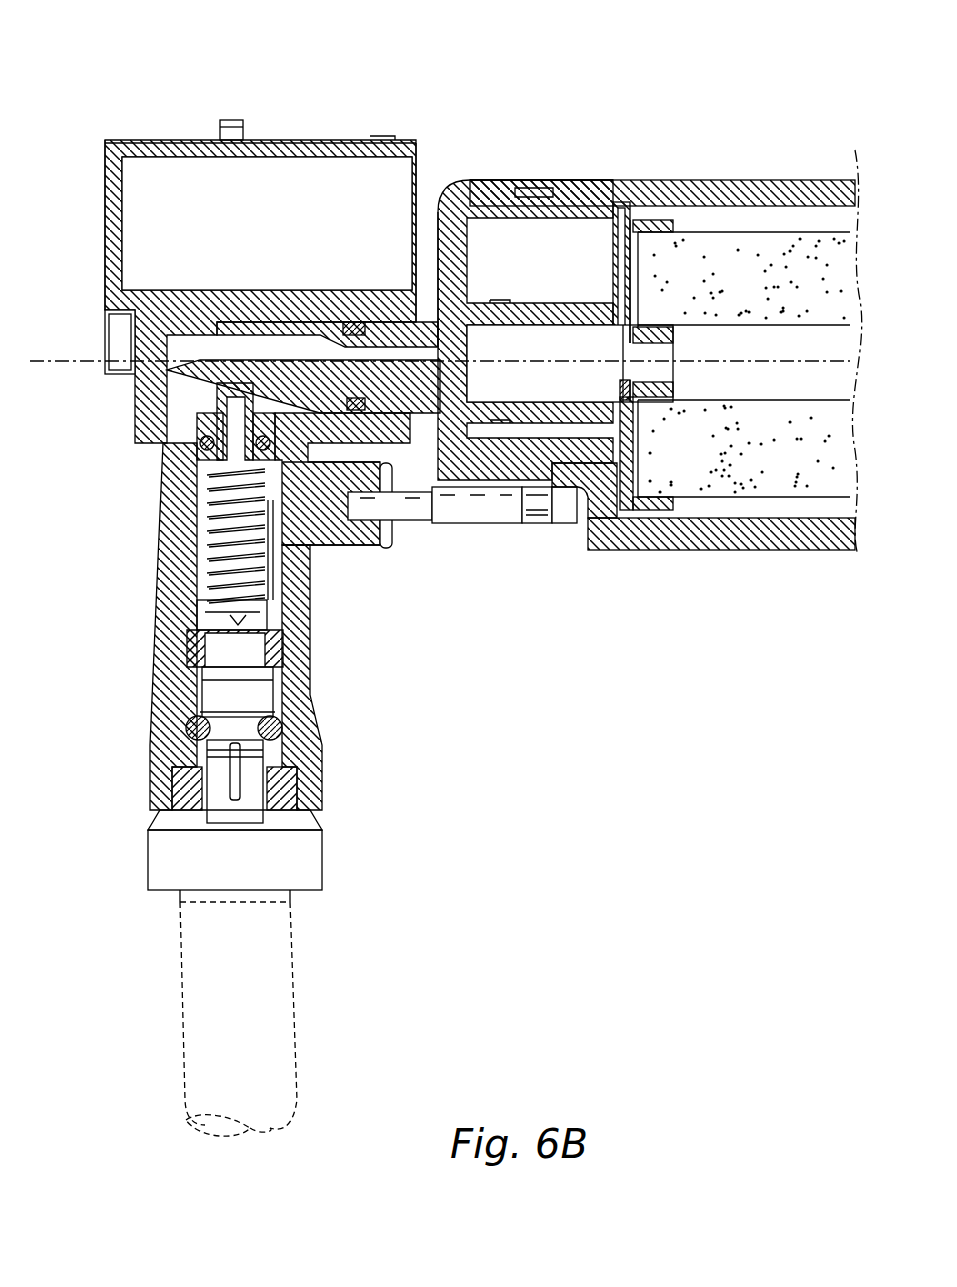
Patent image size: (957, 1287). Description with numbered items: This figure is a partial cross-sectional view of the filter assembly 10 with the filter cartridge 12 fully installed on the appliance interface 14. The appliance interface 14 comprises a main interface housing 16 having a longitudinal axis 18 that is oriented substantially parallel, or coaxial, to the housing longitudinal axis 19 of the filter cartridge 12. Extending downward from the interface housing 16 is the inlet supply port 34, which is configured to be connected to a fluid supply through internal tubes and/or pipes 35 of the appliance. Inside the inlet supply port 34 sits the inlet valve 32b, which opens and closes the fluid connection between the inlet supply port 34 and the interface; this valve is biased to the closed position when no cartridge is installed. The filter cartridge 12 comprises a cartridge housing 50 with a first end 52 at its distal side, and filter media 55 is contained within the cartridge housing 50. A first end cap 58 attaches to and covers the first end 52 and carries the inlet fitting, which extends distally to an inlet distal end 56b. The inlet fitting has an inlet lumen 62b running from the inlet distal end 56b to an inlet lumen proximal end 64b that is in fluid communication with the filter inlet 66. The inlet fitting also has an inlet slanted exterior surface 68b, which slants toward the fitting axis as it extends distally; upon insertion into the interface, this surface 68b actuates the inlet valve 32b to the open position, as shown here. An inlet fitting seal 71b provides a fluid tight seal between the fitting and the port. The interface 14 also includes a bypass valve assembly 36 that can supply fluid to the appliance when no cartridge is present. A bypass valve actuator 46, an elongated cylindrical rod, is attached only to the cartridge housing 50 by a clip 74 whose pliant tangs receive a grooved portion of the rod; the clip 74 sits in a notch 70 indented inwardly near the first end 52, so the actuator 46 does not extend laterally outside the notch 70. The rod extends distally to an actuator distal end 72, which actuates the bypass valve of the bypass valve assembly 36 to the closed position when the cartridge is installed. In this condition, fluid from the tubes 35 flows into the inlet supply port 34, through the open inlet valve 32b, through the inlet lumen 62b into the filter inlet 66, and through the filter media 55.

The filter assembly 10 is at (615, 82).
The filter cartridge 12 is at (551, 150).
The appliance interface 14 is at (135, 113).
The main interface housing 16 is at (105, 197).
The longitudinal axis 18 is at (68, 360).
The housing longitudinal axis 19 is at (770, 361).
The inlet valve 32b is at (193, 482).
The inlet supply port 34 is at (170, 722).
The tubes and/or pipes 35 is at (290, 1005).
The bypass valve assembly 36 is at (352, 552).
The bypass valve actuator 46 is at (452, 527).
The cartridge housing 50 is at (655, 178).
The first end 52 is at (600, 183).
The filter media 55 is at (755, 240).
The inlet distal end 56b is at (275, 385).
The first end cap 58 is at (463, 173).
The inlet lumen 62b is at (222, 280).
The inlet lumen proximal end 64b is at (420, 352).
The filter inlet 66 is at (663, 371).
The inlet slanted exterior surface 68b is at (200, 431).
The notch 70 is at (585, 545).
The inlet fitting seal 71b is at (345, 320).
The actuator distal end 72 is at (352, 512).
The clip 74 is at (532, 522).